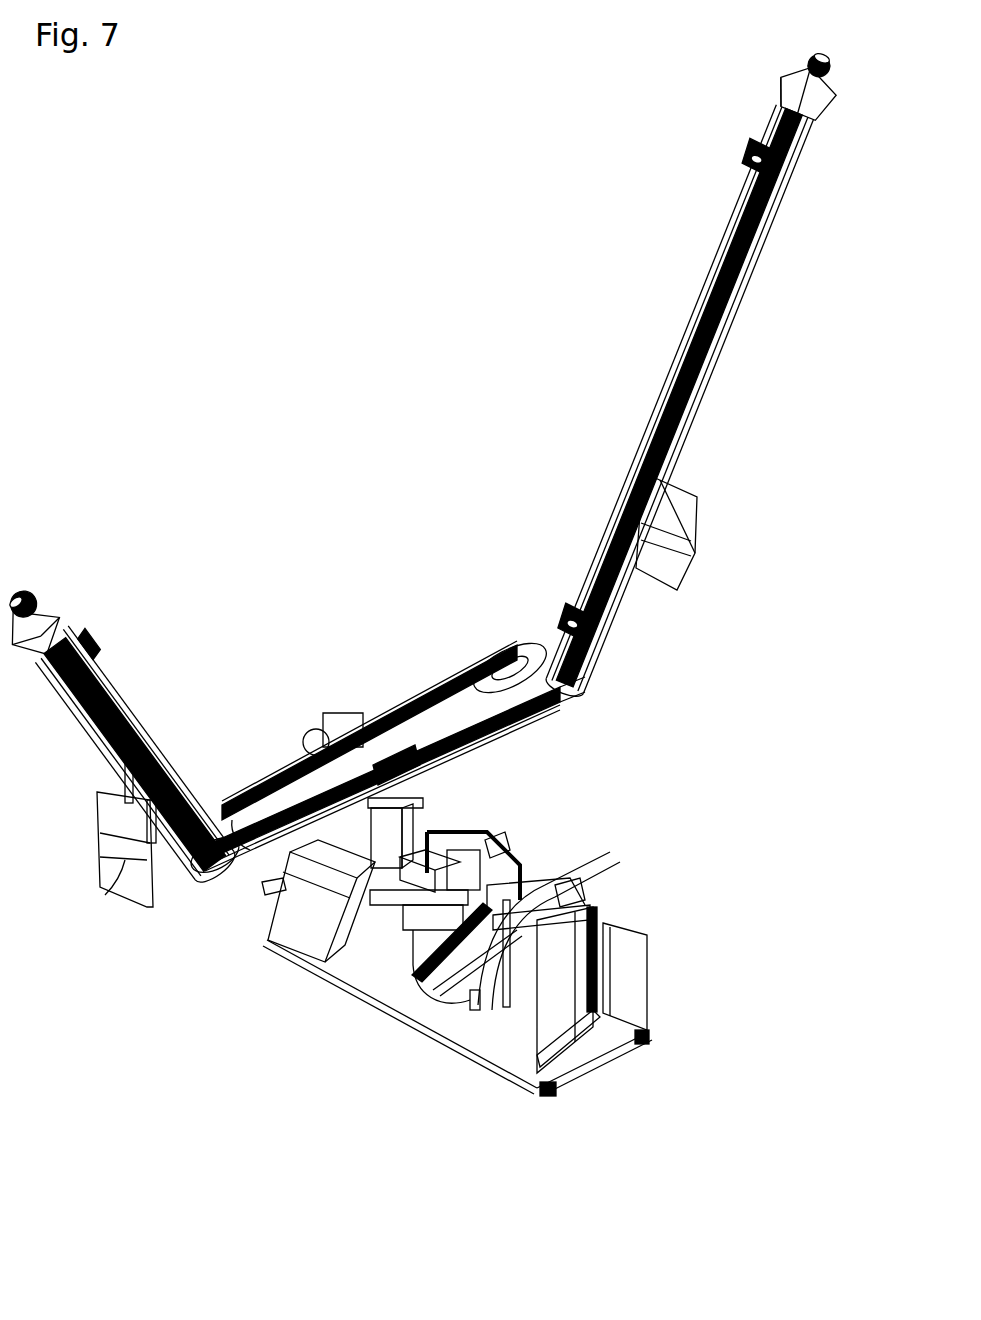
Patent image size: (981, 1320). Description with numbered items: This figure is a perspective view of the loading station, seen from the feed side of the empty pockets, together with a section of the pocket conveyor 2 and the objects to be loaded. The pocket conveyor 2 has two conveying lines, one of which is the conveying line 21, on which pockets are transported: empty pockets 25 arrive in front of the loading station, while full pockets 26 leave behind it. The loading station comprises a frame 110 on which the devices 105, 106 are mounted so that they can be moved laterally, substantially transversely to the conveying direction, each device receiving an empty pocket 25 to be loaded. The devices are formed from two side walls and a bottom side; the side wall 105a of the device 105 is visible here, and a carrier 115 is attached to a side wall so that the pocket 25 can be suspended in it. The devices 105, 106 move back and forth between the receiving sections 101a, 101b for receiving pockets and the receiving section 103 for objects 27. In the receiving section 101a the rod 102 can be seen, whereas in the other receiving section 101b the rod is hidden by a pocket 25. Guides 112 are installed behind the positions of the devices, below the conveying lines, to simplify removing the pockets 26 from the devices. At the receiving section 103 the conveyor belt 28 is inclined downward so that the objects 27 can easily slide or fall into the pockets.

The pocket conveyor 2 is at (20, 548).
The conveying line 21 is at (97, 667).
The empty pocket 25 is at (125, 905).
The full pocket 26 is at (700, 538).
The object 27 is at (403, 840).
The conveyor belt 28 is at (353, 915).
The receiving section for receiving pockets 101a is at (450, 1053).
The receiving section for receiving pockets 101b is at (257, 917).
The rod 102 is at (522, 1090).
The receiving section for objects 103 is at (458, 838).
The device 105 is at (543, 883).
The side wall 105a is at (560, 1027).
The device 106 is at (470, 835).
The frame 110 is at (437, 1017).
The guide 112 is at (382, 772).
The carrier 115 is at (495, 850).